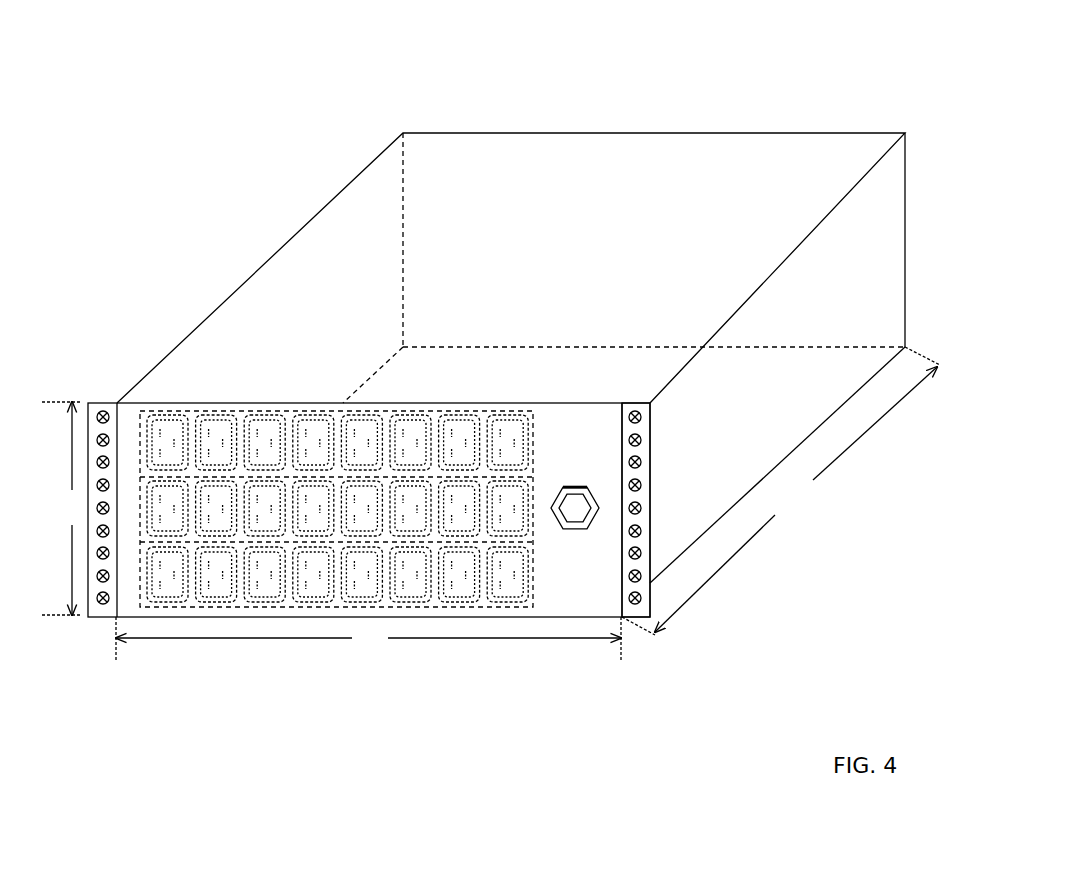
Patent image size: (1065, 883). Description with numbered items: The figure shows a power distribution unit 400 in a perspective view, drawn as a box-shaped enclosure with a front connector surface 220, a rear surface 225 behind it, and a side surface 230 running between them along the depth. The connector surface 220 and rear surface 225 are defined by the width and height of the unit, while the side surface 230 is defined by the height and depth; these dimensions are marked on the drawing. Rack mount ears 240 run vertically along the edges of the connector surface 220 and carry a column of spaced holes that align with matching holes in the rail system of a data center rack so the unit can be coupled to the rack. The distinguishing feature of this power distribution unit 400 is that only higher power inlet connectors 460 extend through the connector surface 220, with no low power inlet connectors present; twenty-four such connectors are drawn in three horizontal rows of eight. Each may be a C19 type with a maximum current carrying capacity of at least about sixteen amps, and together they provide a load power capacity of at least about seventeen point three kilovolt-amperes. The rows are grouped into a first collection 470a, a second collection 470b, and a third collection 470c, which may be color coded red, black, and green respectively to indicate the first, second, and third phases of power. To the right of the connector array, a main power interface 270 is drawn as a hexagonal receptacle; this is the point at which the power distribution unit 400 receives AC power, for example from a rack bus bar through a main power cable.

The power distribution unit 400 is at (203, 98).
The connector surface 220 is at (536, 131).
The rear surface 225 is at (511, 268).
The side surface 230 is at (777, 358).
The rack mount ears 240 is at (646, 585).
The higher power inlet connectors 460 is at (458, 414).
The first collection 470a is at (140, 428).
The second collection 470b is at (140, 533).
The third collection 470c is at (140, 587).
The main power interface 270 is at (575, 486).